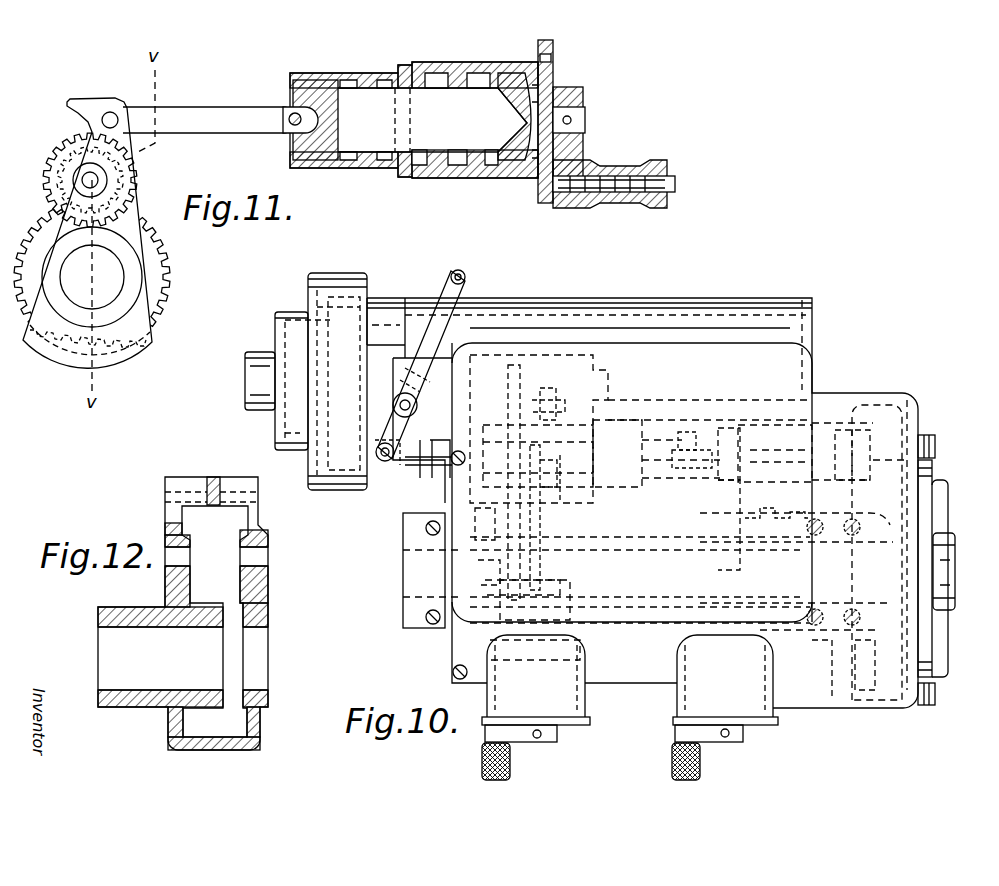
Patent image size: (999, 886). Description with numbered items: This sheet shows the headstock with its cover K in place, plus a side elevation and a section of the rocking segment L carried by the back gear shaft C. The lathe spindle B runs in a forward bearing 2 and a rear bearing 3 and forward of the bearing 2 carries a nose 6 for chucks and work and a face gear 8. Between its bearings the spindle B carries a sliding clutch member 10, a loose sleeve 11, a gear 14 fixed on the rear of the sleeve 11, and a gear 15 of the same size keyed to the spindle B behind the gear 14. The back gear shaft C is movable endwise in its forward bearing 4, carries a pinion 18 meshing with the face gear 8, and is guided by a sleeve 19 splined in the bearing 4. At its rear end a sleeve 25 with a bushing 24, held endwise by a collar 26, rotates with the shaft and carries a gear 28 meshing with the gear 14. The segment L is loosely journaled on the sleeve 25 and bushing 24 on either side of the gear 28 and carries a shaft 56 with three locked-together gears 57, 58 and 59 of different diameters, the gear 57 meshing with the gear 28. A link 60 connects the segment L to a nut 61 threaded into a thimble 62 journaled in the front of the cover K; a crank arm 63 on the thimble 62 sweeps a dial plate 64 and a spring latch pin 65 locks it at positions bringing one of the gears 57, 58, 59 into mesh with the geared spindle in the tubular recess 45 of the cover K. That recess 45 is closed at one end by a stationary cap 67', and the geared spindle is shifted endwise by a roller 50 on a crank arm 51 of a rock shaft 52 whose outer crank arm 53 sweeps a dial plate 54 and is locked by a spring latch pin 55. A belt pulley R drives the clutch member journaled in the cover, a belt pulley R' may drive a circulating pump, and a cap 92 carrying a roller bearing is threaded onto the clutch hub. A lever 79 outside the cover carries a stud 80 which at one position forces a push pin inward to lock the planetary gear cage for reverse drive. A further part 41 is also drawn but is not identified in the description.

In FIG. 10, the forward bearing 2 is at (827, 607).
In FIG. 10, the rear bearing 3 is at (417, 565).
In FIG. 10, the forward bearing 4 is at (830, 420).
In FIG. 10, the nose 6 is at (955, 558).
In FIG. 10, the face gear 8 is at (935, 468).
In FIG. 10, the sliding clutch member 10 is at (752, 524).
In FIG. 10, the sleeve 11 is at (600, 538).
In FIG. 10, the gear 14 is at (540, 520).
In FIG. 10, the gear 15 is at (476, 508).
In FIG. 10, the pinion 18 is at (868, 428).
In FIG. 10, the sleeve 19 is at (758, 420).
In FIG. 10, the bushing 24 is at (495, 418).
In FIG. 10, the sleeve 25 is at (620, 418).
In FIG. 10, the collar 26 is at (383, 487).
In FIG. 11, the gear 28 is at (170, 274).
In FIG. 10, the gear 28 is at (528, 378).
In FIG. 10, the clamp 41 is at (937, 447).
In FIG. 10, the tubular recess 45 is at (505, 316).
In FIG. 10, the roller 50 is at (686, 430).
In FIG. 10, the crank arm 51 is at (685, 480).
In FIG. 10, the rock shaft 52 is at (718, 502).
In FIG. 10, the crank arm 53 is at (708, 745).
In FIG. 10, the dial plate 54 is at (782, 724).
In FIG. 10, the spring latch pin 55 is at (668, 760).
In FIG. 11, the shaft 56 is at (98, 182).
In FIG. 11, the gear 57 is at (60, 190).
In FIG. 10, the gear 57 is at (512, 410).
In FIG. 11, the gear 58 is at (56, 170).
In FIG. 10, the gear 58 is at (548, 404).
In FIG. 11, the gear 59 is at (52, 142).
In FIG. 10, the gear 59 is at (556, 385).
In FIG. 11, the link 60 is at (185, 106).
In FIG. 10, the link 60 is at (540, 528).
In FIG. 11, the nut 61 is at (282, 143).
In FIG. 10, the nut 61 is at (570, 580).
In FIG. 11, the thimble 62 is at (356, 170).
In FIG. 10, the thimble 62 is at (565, 635).
In FIG. 11, the crank arm 63 is at (584, 146).
In FIG. 10, the crank arm 63 is at (520, 745).
In FIG. 11, the dial plate 64 is at (545, 204).
In FIG. 10, the dial plate 64 is at (592, 721).
In FIG. 11, the spring latch pin 65 is at (676, 186).
In FIG. 10, the spring latch pin 65 is at (478, 764).
In FIG. 10, the stationary cap 67' is at (827, 345).
In FIG. 10, the lever 79 is at (448, 290).
In FIG. 10, the stud 80 is at (386, 462).
In FIG. 10, the cap 92 is at (258, 410).
In FIG. 10, the lathe spindle B is at (650, 592).
In FIG. 10, the back gear shaft C is at (425, 470).
In FIG. 10, the cover K is at (612, 298).
In FIG. 11, the rocking segment L is at (148, 340).
In FIG. 12, the rocking segment L is at (165, 589).
In FIG. 10, the belt pulley R is at (337, 366).
In FIG. 10, the belt pulley R' is at (296, 361).